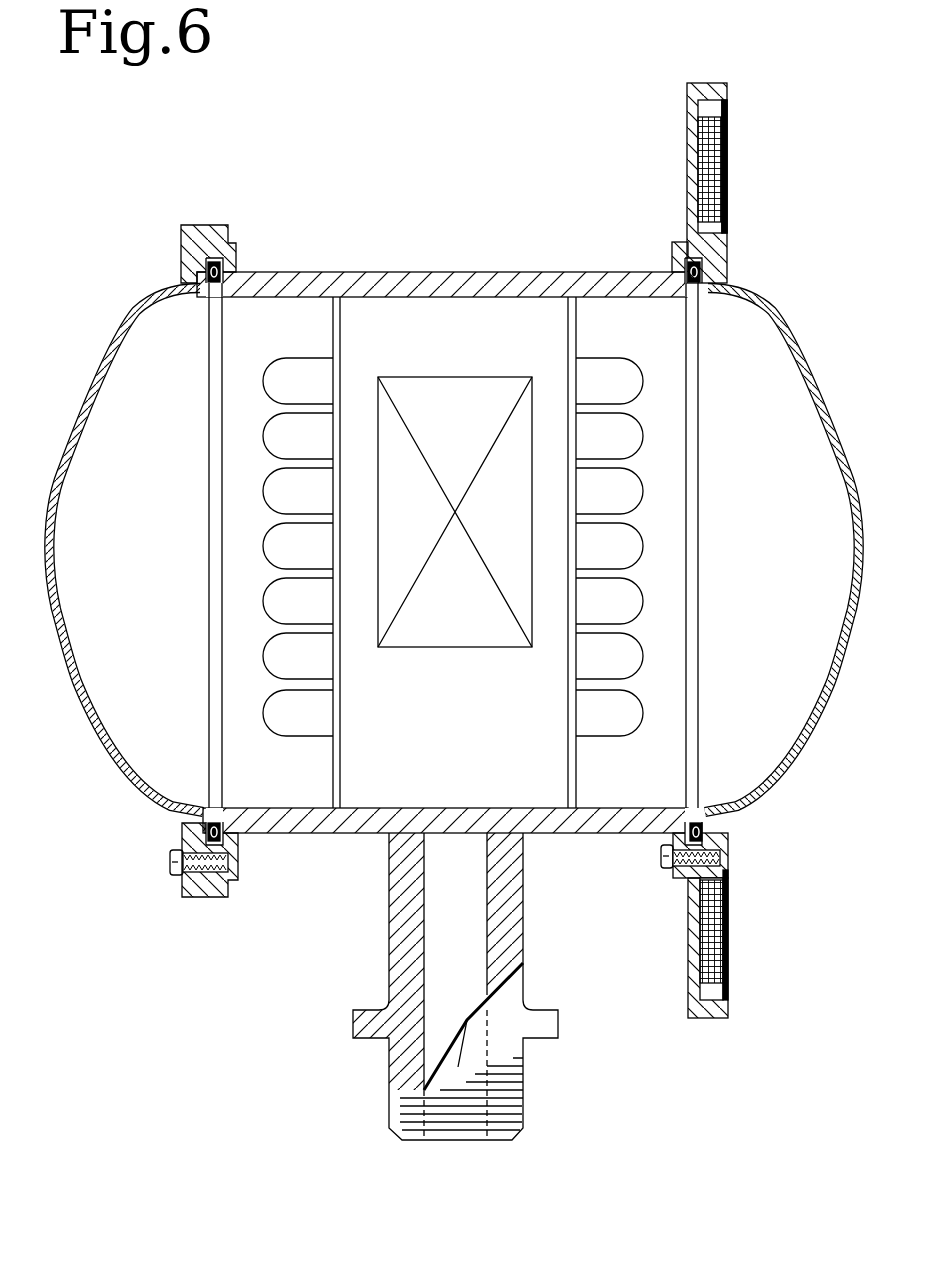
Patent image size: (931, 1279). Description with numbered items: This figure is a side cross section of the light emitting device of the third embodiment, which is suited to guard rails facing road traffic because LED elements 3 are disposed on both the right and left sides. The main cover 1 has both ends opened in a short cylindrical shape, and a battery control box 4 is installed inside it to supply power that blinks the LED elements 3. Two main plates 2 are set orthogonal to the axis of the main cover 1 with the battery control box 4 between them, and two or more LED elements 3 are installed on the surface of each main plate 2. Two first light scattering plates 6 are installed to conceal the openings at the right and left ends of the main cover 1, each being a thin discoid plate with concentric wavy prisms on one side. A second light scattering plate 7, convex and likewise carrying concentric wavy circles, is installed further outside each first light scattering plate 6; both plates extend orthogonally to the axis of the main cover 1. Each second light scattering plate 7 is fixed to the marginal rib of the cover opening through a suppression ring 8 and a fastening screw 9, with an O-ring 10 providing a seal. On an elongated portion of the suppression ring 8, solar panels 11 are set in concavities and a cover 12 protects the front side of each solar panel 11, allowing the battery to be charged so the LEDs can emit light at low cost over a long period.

The main cover 1 is at (590, 272).
The main plate 2 is at (333, 328).
The LED element 3 is at (274, 437).
The battery control box 4 is at (416, 392).
The first light scattering plate 6 is at (216, 503).
The second light scattering plate 7 is at (146, 296).
The suppression ring 8 is at (728, 250).
The fastening screw 9 is at (682, 862).
The O-ring 10 is at (706, 830).
The solar panel 11 is at (700, 142).
The cover 12 is at (728, 133).